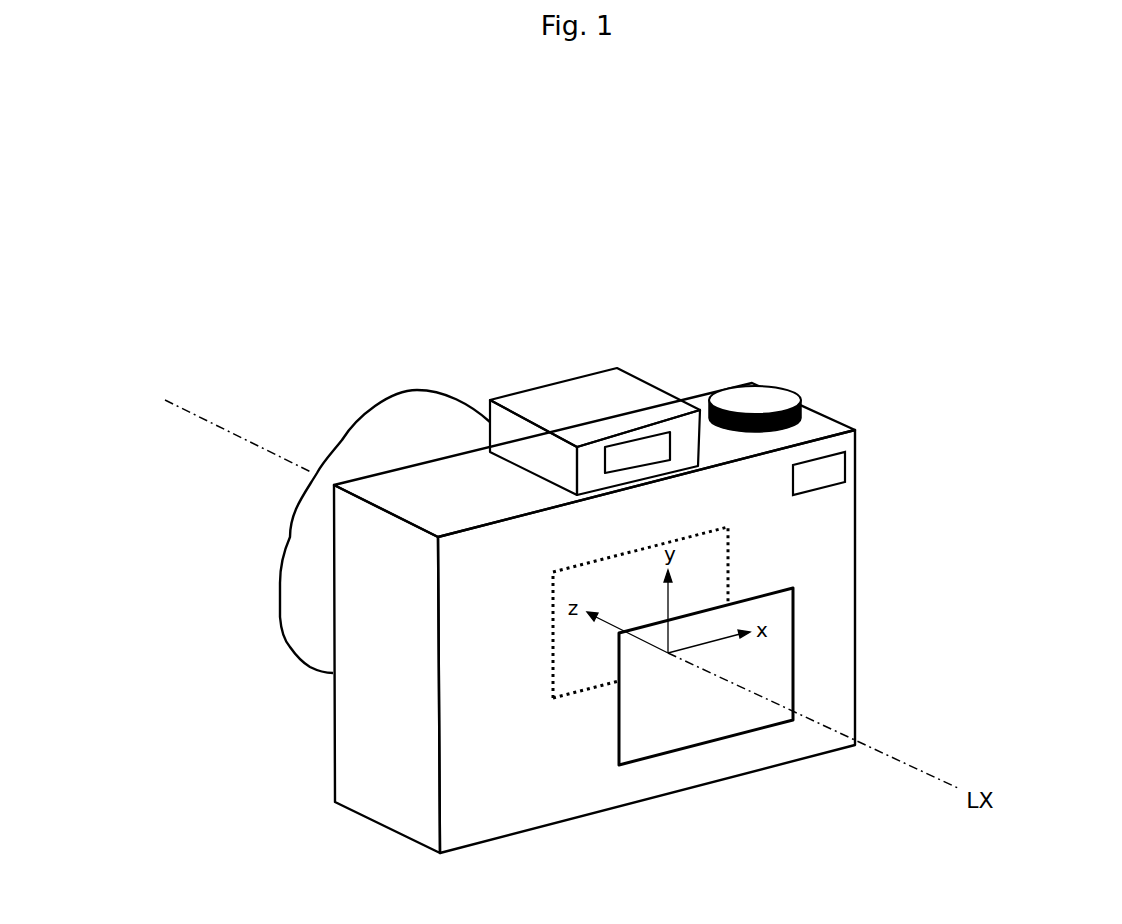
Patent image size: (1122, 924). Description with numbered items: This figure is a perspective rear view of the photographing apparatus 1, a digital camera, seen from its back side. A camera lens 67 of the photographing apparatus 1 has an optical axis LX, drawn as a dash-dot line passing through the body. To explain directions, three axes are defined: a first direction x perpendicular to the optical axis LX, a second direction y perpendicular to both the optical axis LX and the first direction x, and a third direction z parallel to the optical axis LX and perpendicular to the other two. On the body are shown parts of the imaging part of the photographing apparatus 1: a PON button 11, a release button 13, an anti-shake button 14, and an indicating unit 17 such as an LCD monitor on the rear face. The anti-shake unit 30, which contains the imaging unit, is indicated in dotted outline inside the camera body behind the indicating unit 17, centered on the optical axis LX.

The photographing apparatus 1 is at (750, 382).
The PON button 11 is at (856, 460).
The release button 13 is at (783, 389).
The anti-shake button 14 is at (617, 443).
The indicating unit 17 is at (797, 604).
The anti-shake unit 30 is at (732, 519).
The camera lens 67 is at (447, 398).